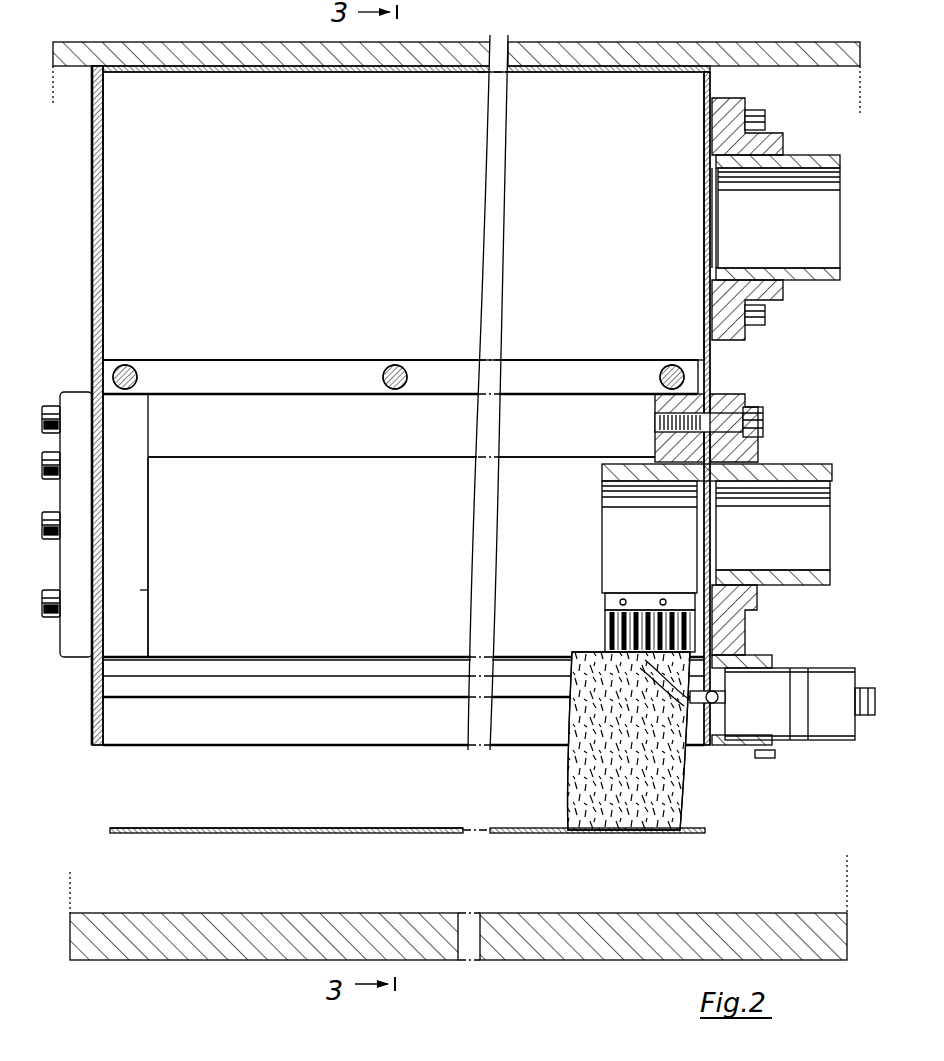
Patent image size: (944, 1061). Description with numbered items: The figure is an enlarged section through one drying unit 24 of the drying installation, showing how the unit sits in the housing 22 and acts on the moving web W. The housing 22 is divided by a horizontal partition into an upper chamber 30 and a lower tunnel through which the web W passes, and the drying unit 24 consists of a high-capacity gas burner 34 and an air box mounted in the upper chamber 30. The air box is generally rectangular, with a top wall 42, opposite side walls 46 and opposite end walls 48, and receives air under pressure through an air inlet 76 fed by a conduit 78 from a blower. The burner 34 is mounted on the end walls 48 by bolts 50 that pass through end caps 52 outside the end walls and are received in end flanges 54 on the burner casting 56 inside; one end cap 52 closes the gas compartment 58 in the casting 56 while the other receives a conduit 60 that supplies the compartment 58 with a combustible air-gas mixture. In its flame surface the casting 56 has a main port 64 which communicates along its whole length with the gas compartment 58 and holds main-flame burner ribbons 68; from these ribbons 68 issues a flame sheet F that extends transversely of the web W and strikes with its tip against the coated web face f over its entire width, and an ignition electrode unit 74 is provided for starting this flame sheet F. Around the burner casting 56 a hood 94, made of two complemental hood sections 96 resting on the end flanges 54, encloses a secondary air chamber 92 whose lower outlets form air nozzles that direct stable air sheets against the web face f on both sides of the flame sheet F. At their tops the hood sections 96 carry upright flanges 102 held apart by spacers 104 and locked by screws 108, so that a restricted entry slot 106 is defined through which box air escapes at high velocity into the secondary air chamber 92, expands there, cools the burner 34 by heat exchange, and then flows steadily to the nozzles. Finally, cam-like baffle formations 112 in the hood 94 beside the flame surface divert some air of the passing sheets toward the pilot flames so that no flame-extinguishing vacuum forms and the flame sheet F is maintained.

The housing 22 is at (606, 56).
The drying unit 24 is at (90, 152).
The upper chamber 30 is at (778, 90).
The gas burner 34 is at (284, 458).
The top wall 42 is at (372, 73).
The side wall 46 is at (222, 120).
The end wall 48 is at (92, 264).
The bolt 50 is at (764, 423).
The end cap 52 is at (746, 458).
The end flange 54 is at (655, 443).
The burner casting 56 is at (400, 480).
The gas compartment 58 is at (658, 561).
The conduit 60 is at (806, 577).
The main port 64 is at (640, 607).
The main-flame burner ribbon 68 is at (630, 630).
The ignition electrode unit 74 is at (750, 694).
The air inlet 76 is at (702, 220).
The conduit 78 is at (806, 180).
The secondary air chamber 92 is at (396, 436).
The hood 94 is at (256, 405).
The hood section 96 is at (546, 404).
The upright flange 102 is at (320, 372).
The spacer 104 is at (136, 368).
The entry slot 106 is at (232, 376).
The screw 108 is at (125, 364).
The cam-like baffle formation 112 is at (353, 672).
The flame sheet F is at (602, 770).
The coated web face f is at (418, 828).
The moving web W is at (508, 833).